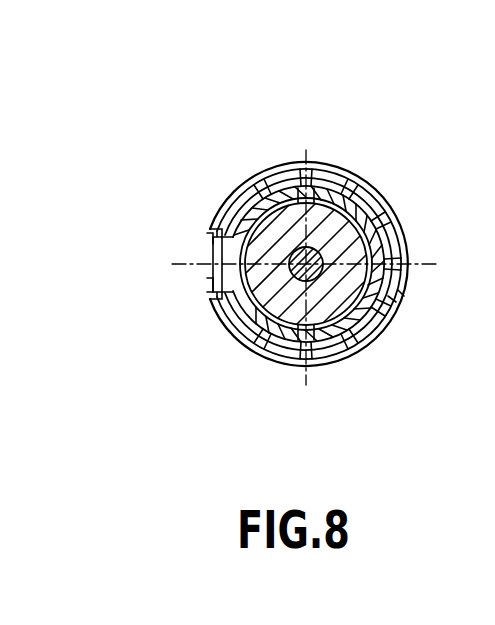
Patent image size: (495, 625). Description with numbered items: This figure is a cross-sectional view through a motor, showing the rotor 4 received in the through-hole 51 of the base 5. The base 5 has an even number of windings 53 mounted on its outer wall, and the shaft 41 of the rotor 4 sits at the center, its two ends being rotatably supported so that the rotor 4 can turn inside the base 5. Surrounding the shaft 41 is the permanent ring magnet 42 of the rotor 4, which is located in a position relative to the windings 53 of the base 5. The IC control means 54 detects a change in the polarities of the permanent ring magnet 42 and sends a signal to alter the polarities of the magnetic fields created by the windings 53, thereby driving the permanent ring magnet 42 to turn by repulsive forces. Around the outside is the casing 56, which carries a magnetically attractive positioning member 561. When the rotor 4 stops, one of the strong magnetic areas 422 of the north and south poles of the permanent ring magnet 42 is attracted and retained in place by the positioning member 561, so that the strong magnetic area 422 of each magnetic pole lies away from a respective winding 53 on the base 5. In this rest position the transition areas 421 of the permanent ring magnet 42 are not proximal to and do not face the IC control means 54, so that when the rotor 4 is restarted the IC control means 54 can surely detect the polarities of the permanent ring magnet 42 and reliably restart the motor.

The rotor 4 is at (233, 330).
The shaft 41 is at (297, 285).
The permanent ring magnet 42 is at (337, 343).
The transition area 421 is at (302, 195).
The strong magnetic area 422 is at (208, 235).
The base 5 is at (343, 167).
The through-hole 51 is at (367, 205).
The windings 53 is at (245, 190).
The IC control means 54 is at (410, 247).
The casing 56 is at (210, 217).
The magnetically attractive positioning member 561 is at (205, 278).